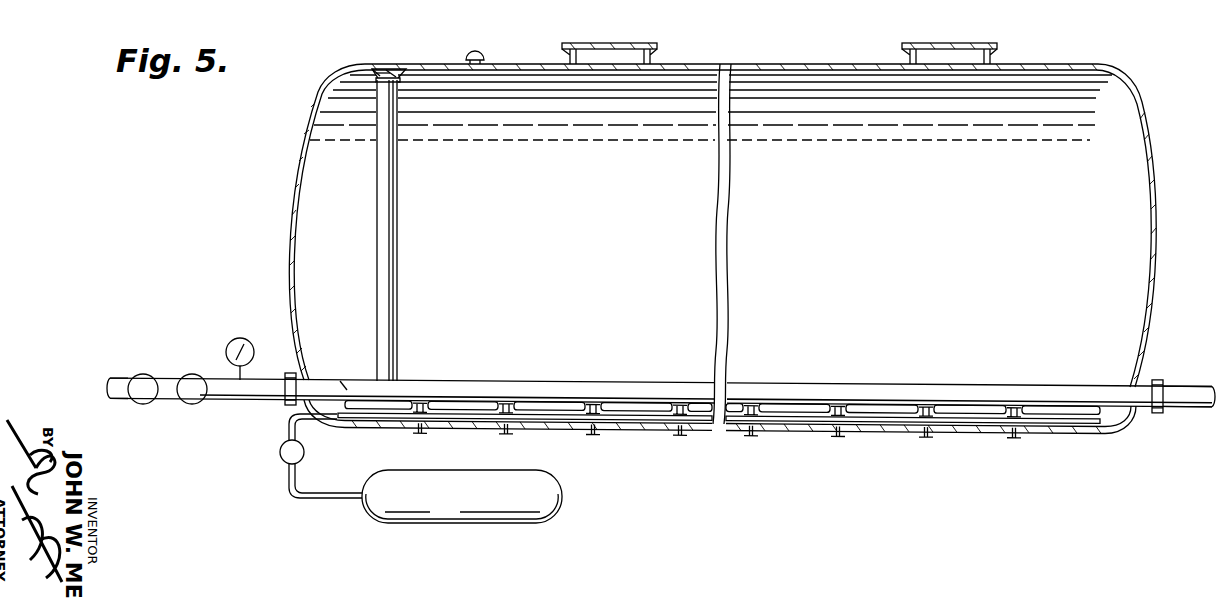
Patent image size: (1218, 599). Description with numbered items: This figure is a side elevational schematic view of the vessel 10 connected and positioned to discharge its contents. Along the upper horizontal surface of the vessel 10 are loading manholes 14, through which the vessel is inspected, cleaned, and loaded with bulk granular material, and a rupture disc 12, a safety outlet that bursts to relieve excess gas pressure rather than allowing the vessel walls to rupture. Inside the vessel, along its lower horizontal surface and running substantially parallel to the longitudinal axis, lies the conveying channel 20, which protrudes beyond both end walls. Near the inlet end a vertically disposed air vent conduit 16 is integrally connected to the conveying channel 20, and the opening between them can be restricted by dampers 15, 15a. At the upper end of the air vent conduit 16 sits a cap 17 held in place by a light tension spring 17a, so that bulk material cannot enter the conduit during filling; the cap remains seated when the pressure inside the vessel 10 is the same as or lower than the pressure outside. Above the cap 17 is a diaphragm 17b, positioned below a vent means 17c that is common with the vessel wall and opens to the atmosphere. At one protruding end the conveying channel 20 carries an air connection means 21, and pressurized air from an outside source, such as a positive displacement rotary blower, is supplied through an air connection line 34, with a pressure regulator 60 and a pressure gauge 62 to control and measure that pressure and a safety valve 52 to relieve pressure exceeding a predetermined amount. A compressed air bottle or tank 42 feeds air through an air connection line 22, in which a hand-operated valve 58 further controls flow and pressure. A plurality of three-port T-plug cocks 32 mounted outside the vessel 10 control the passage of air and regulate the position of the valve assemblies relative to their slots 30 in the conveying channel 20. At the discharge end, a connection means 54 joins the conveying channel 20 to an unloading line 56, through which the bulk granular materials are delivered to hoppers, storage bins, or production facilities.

The vessel 10 is at (757, 67).
The rupture disc 12 is at (482, 57).
The loading manhole 14 is at (612, 54).
The damper 15 is at (402, 353).
The damper 15a is at (350, 380).
The air vent conduit 16 is at (399, 220).
The cap 17 is at (402, 77).
The light tension spring 17a is at (372, 73).
The diaphragm 17b is at (388, 73).
The vent means 17c is at (392, 71).
The conveying channel 20 is at (570, 380).
The air connection means 21 is at (291, 372).
The air connection line 22 is at (303, 499).
The slots 30 is at (450, 393).
The three-port T-plug cocks 32 is at (515, 431).
The air connection line 34 is at (108, 386).
The compressed air bottle or tank 42 is at (446, 513).
The safety valve 52 is at (192, 405).
The connection means 54 is at (1160, 371).
The unloading line 56 is at (1188, 399).
The hand-operated valve 58 is at (305, 453).
The pressure regulator 60 is at (134, 377).
The pressure gauge 62 is at (236, 340).